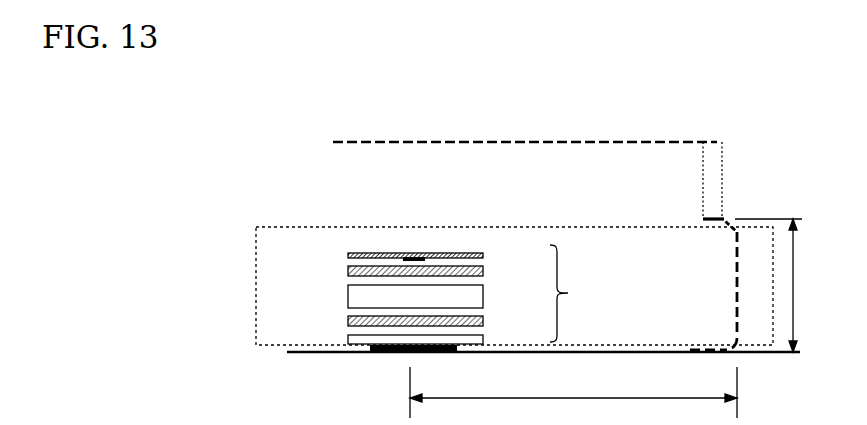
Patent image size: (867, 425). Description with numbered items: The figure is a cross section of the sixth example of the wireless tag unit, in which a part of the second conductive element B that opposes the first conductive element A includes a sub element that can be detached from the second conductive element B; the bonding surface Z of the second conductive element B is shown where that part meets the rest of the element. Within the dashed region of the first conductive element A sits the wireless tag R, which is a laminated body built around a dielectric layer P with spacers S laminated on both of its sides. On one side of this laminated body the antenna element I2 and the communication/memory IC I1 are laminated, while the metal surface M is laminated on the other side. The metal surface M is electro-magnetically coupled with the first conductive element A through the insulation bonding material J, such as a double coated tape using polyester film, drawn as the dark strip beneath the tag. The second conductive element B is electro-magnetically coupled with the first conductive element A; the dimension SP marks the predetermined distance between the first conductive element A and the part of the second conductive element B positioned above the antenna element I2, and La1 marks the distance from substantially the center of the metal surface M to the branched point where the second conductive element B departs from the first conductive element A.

The second conductive element B is at (612, 136).
The bonding surface Z is at (688, 218).
The first conductive element A is at (660, 346).
The predetermined distance SP is at (777, 285).
The distance La1 is at (573, 392).
The antenna element I2 is at (483, 256).
The communication/memory IC I1 is at (405, 259).
The spacer S is at (483, 271).
The dielectric layer P is at (483, 300).
The metal surface M is at (483, 340).
The insulation bonding material J is at (390, 354).
The wireless tag R is at (568, 293).